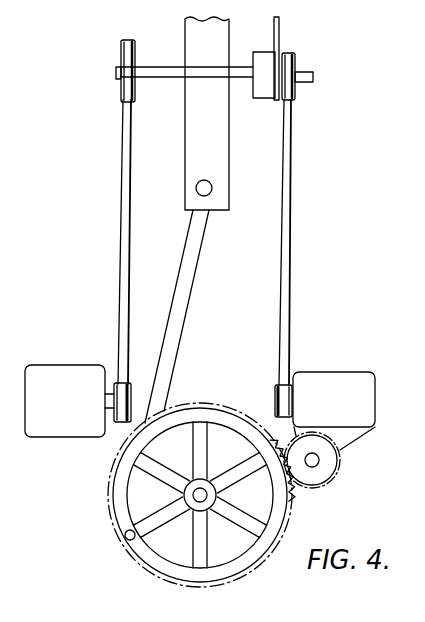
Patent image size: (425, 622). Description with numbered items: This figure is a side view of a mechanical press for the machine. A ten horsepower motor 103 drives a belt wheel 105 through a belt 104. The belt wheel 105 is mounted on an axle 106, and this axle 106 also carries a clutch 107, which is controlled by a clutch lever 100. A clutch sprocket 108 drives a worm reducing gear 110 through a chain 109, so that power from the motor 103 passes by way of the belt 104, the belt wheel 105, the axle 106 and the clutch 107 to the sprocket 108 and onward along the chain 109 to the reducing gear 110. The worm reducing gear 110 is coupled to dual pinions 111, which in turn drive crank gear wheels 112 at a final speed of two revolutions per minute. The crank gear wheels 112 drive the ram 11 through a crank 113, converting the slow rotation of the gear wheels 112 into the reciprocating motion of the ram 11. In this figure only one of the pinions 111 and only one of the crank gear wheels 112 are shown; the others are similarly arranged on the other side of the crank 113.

The ram 11 is at (210, 50).
The clutch lever 100 is at (279, 22).
The motor 103 is at (52, 420).
The belt 104 is at (122, 225).
The belt wheel 105 is at (120, 52).
The axle 106 is at (158, 72).
The clutch 107 is at (267, 62).
The clutch sprocket 108 is at (295, 90).
The chain 109 is at (292, 170).
The worm reducing gear 110 is at (345, 385).
The dual pinions 111 is at (322, 485).
The crank gear wheels 112 is at (152, 567).
The crank 113 is at (181, 297).